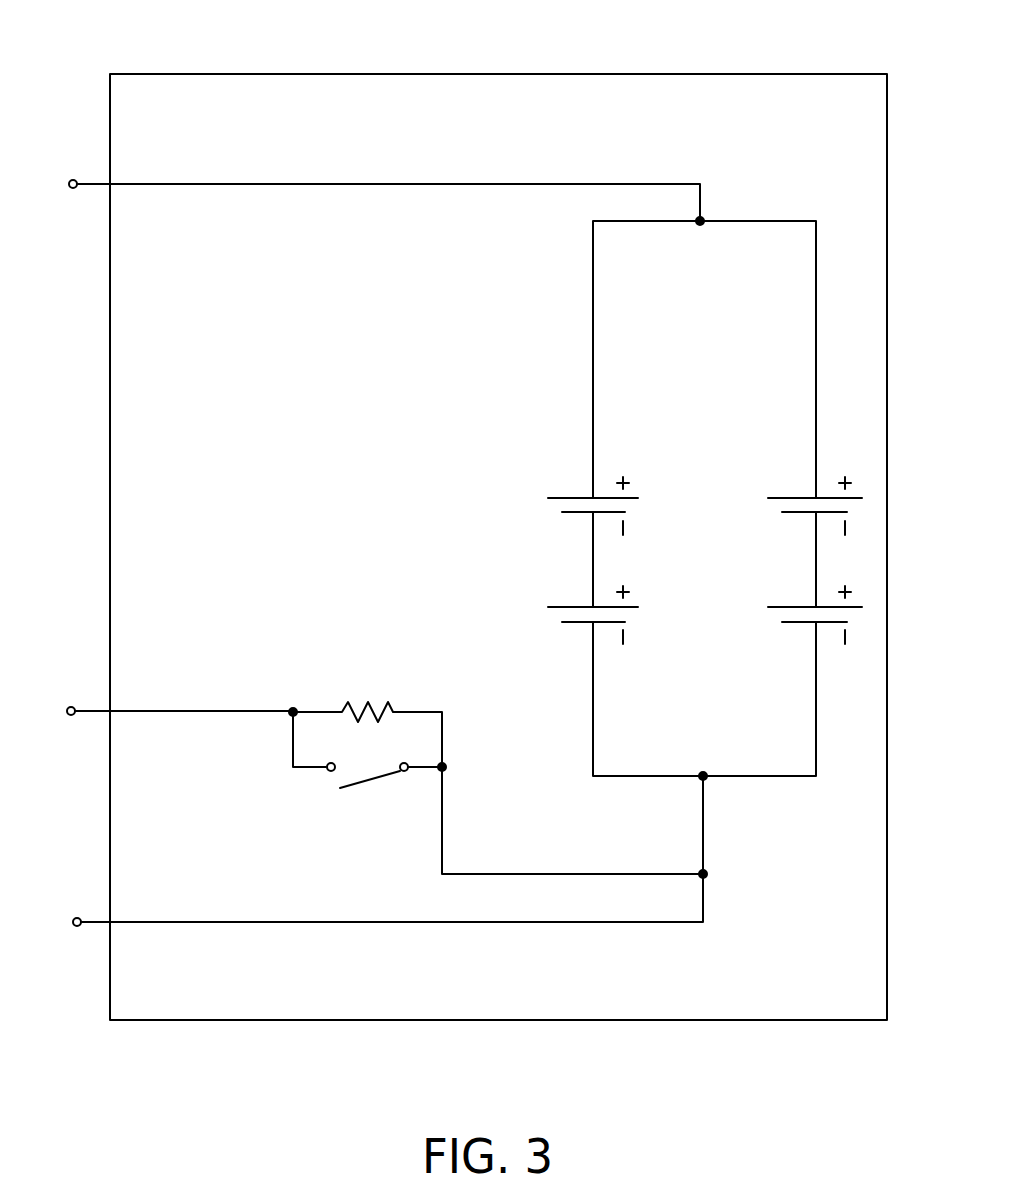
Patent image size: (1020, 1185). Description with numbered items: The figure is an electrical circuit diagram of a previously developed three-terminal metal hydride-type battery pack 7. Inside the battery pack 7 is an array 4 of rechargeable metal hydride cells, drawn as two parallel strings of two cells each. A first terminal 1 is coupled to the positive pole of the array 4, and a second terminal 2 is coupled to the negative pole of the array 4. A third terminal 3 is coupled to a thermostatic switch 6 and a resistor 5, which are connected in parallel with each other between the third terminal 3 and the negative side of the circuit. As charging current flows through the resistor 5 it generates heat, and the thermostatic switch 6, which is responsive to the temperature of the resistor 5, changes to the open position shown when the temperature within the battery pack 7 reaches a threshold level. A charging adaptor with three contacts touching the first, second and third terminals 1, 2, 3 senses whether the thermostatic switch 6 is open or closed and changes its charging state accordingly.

The first terminal 1 is at (86, 182).
The second terminal 2 is at (87, 920).
The third terminal 3 is at (83, 709).
The array of rechargeable metal hydride cells 4 is at (765, 184).
The resistor 5 is at (368, 705).
The thermostatic switch 6 is at (392, 774).
The battery pack 7 is at (517, 74).